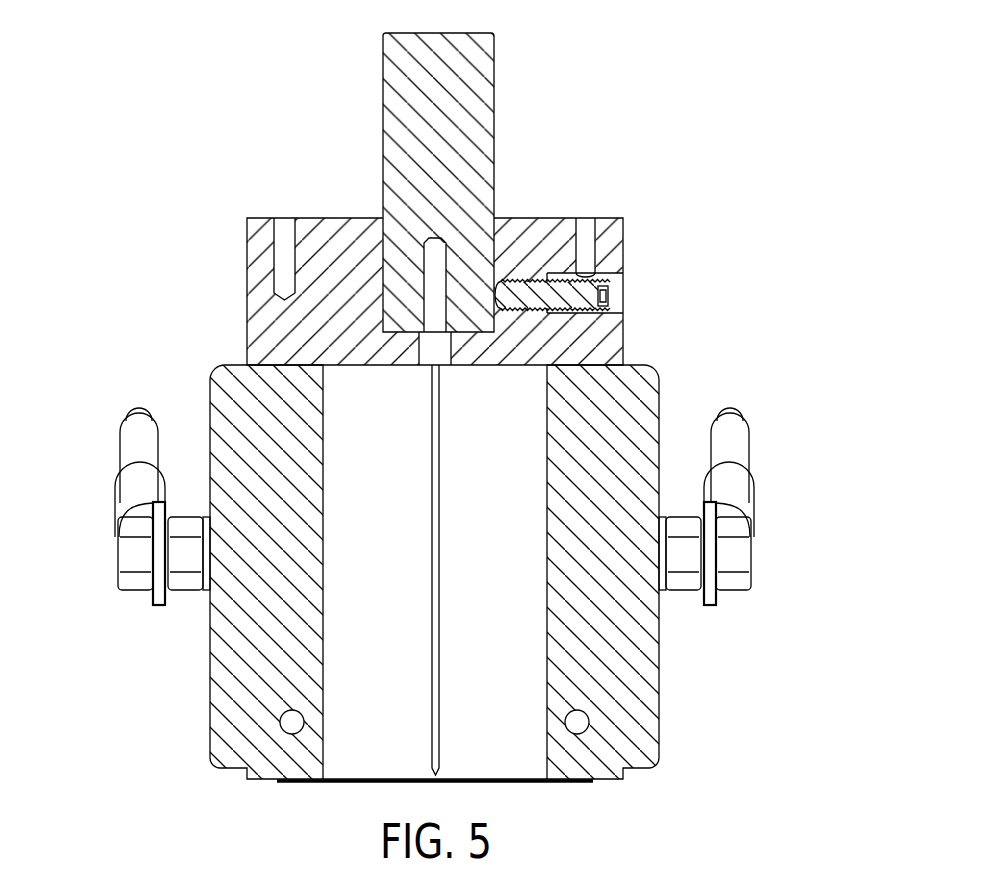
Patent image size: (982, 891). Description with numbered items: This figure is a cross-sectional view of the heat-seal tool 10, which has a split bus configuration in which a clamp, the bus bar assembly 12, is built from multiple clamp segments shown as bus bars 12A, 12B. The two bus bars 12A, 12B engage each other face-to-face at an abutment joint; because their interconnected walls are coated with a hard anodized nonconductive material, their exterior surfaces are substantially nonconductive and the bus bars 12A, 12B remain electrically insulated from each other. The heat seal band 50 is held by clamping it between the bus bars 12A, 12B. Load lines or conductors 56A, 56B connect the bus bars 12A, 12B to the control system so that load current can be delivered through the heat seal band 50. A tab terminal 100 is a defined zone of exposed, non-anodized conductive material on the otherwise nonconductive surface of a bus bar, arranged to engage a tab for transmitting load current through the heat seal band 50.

The heat-seal tool 10 is at (517, 92).
The bus bar assembly 12 is at (650, 272).
The bus bar 12A is at (224, 385).
The bus bar 12B is at (635, 400).
The tab terminal 100 is at (507, 388).
The heat seal band 50 is at (520, 782).
The load line or conductor 56A is at (126, 442).
The load line or conductor 56B is at (742, 437).